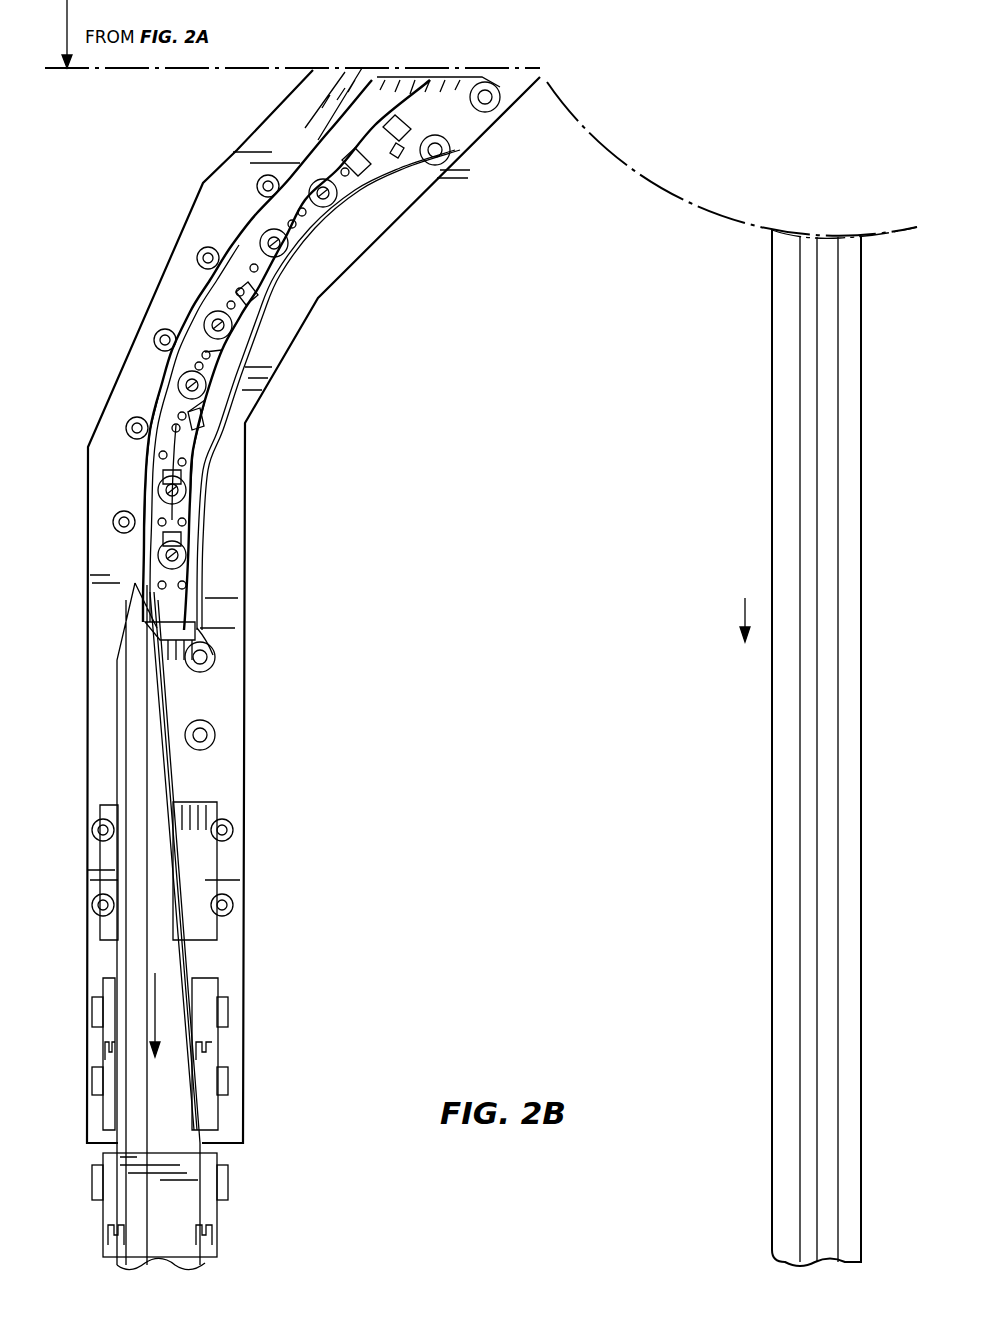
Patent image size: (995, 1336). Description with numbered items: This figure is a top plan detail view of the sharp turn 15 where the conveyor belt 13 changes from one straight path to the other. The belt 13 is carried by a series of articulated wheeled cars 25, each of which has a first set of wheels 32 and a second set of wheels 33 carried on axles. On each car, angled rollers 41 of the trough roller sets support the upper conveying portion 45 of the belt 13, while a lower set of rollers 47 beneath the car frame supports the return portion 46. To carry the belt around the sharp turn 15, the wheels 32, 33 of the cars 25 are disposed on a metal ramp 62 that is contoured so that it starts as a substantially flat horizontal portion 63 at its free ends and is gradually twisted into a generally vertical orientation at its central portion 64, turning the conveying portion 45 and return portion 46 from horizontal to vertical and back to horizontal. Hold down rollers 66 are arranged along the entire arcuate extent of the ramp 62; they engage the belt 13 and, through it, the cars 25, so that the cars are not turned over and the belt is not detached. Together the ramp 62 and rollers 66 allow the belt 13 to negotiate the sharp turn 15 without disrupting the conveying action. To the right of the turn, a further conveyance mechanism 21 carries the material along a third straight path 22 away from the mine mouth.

The conveyor belt 13 is at (388, 90).
The sharp turn 15 is at (210, 145).
The conveyance mechanism 21 is at (765, 705).
The third straight path 22 is at (745, 605).
The articulated wheeled cars 25 is at (228, 347).
The first set of wheels 32 is at (500, 103).
The second set of wheels 33 is at (452, 150).
The angled rollers 41 is at (155, 397).
The conveying portion 45 is at (187, 1213).
The return portion 46 is at (190, 432).
The lower set of rollers 47 is at (205, 396).
The metal ramp 62 is at (360, 193).
The flat horizontal portion 63 is at (403, 155).
The central portion 64 is at (240, 357).
The hold down rollers 66 is at (198, 265).